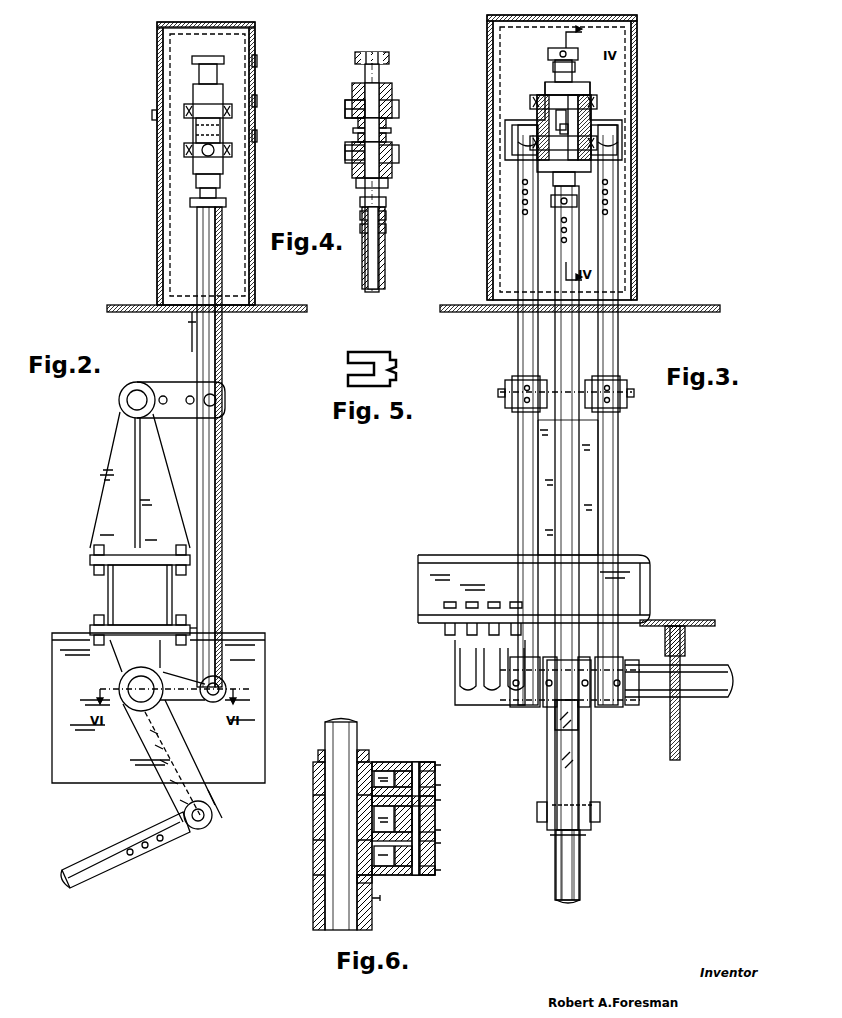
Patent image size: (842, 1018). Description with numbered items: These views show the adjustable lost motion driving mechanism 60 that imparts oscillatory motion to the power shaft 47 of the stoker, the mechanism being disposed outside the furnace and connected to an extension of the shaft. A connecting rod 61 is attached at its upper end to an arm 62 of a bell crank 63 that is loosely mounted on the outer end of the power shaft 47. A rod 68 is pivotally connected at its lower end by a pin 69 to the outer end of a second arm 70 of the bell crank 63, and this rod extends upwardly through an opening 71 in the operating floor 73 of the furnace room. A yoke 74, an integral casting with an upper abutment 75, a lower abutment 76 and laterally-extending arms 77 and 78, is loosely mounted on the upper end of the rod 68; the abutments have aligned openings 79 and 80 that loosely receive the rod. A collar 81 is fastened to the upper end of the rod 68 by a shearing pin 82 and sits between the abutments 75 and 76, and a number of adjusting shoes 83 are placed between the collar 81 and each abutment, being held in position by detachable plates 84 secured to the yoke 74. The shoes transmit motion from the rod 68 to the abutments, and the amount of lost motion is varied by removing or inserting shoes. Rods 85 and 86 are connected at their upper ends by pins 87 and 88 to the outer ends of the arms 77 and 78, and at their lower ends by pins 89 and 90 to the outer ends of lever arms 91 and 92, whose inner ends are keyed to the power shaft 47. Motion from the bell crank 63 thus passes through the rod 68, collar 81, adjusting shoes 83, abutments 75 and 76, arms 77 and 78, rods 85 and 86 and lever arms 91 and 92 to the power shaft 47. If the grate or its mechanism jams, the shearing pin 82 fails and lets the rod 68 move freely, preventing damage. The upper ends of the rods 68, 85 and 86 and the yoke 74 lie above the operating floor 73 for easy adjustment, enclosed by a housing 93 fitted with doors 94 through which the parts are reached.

In FIG. 2, the power shaft 47 is at (130, 672).
In FIG. 3, the power shaft 47 is at (672, 700).
In FIG. 6, the power shaft 47 is at (357, 738).
In FIG. 2, the adjustable lost motion driving mechanism 60 is at (262, 491).
In FIG. 3, the adjustable lost motion driving mechanism 60 is at (672, 486).
In FIG. 2, the connecting rod 61 is at (140, 887).
In FIG. 3, the connecting rod 61 is at (580, 870).
In FIG. 2, the arm 62 is at (175, 792).
In FIG. 3, the arm 62 is at (547, 750).
In FIG. 2, the bell crank 63 is at (145, 748).
In FIG. 3, the bell crank 63 is at (540, 765).
In FIG. 6, the bell crank 63 is at (313, 826).
In FIG. 2, the rod 68 is at (225, 532).
In FIG. 3, the rod 68 is at (555, 508).
In FIG. 6, the rod 68 is at (435, 810).
In FIG. 6, the pin 69 is at (435, 824).
In FIG. 2, the second arm 70 is at (222, 700).
In FIG. 3, the second arm 70 is at (540, 705).
In FIG. 6, the second arm 70 is at (435, 788).
In FIG. 2, the opening 71 is at (190, 350).
In FIG. 3, the opening 71 is at (508, 322).
In FIG. 2, the operating floor 73 is at (110, 310).
In FIG. 3, the operating floor 73 is at (680, 310).
In FIG. 2, the yoke 74 is at (193, 90).
In FIG. 4, the yoke 74 is at (392, 95).
In FIG. 3, the yoke 74 is at (590, 82).
In FIG. 4, the upper abutment 75 is at (392, 54).
In FIG. 3, the upper abutment 75 is at (575, 95).
In FIG. 4, the lower abutment 76 is at (392, 172).
In FIG. 3, the lower abutment 76 is at (576, 180).
In FIG. 2, the laterally-extending arm 77 is at (205, 130).
In FIG. 3, the laterally-extending arm 77 is at (530, 118).
In FIG. 3, the laterally-extending arm 78 is at (592, 103).
In FIG. 4, the opening 79 is at (367, 75).
In FIG. 4, the opening 80 is at (362, 182).
In FIG. 4, the collar 81 is at (386, 138).
In FIG. 3, the collar 81 is at (566, 115).
In FIG. 4, the shearing pin 82 is at (391, 130).
In FIG. 3, the shearing pin 82 is at (568, 128).
In FIG. 4, the adjusting shoes 83 is at (345, 108).
In FIG. 5, the adjusting shoes 83 is at (378, 350).
In FIG. 3, the adjusting shoes 83 is at (550, 90).
In FIG. 2, the detachable plates 84 is at (190, 110).
In FIG. 3, the detachable plates 84 is at (530, 130).
In FIG. 2, the rod 85 is at (222, 362).
In FIG. 3, the rod 85 is at (518, 358).
In FIG. 3, the rod 86 is at (618, 338).
In FIG. 2, the pin 87 is at (202, 150).
In FIG. 3, the pin 87 is at (512, 150).
In FIG. 3, the pin 88 is at (617, 150).
In FIG. 2, the pin 89 is at (226, 689).
In FIG. 6, the pin 89 is at (416, 878).
In FIG. 6, the pin 90 is at (428, 762).
In FIG. 3, the lever arm 91 is at (520, 690).
In FIG. 6, the lever arm 91 is at (385, 878).
In FIG. 3, the lever arm 92 is at (630, 705).
In FIG. 6, the lever arm 92 is at (400, 760).
In FIG. 2, the housing 93 is at (255, 30).
In FIG. 3, the housing 93 is at (637, 40).
In FIG. 2, the doors 94 is at (257, 100).